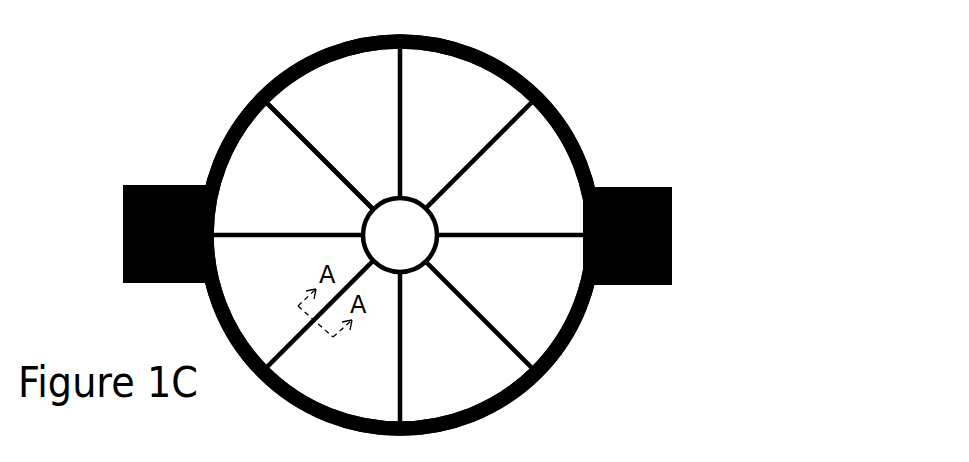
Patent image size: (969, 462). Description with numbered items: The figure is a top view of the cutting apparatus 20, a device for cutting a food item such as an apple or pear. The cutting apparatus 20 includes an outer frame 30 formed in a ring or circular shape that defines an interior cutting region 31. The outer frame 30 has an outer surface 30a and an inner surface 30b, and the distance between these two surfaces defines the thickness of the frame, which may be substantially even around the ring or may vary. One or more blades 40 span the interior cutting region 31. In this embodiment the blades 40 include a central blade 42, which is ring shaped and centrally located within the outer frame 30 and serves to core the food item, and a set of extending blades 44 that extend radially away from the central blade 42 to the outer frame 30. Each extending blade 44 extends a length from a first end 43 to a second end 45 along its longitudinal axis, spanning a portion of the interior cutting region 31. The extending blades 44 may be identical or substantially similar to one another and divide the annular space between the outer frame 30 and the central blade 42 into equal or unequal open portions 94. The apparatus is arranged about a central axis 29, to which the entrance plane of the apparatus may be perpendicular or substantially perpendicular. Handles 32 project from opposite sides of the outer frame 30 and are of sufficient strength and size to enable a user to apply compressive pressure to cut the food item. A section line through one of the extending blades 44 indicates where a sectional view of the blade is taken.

The cutting apparatus 20 is at (96, 89).
The central axis 29 is at (392, 234).
The outer frame 30 is at (558, 110).
The outer surface 30a is at (273, 77).
The inner surface 30b is at (280, 87).
The interior cutting region 31 is at (523, 187).
The handle 32 is at (677, 232).
The blade 40 is at (390, 196).
The central blade 42 is at (437, 248).
The first end 43 is at (361, 203).
The extending blade 44 is at (400, 350).
The second end 45 is at (266, 116).
The open portion 94 is at (466, 115).